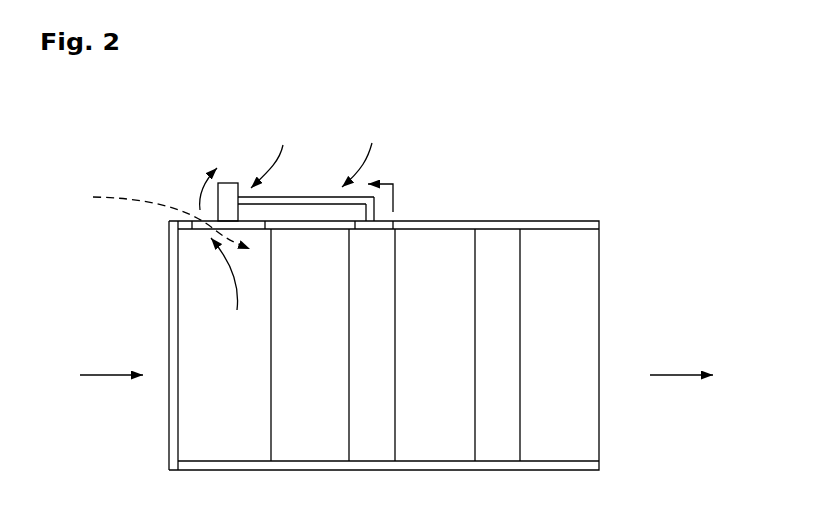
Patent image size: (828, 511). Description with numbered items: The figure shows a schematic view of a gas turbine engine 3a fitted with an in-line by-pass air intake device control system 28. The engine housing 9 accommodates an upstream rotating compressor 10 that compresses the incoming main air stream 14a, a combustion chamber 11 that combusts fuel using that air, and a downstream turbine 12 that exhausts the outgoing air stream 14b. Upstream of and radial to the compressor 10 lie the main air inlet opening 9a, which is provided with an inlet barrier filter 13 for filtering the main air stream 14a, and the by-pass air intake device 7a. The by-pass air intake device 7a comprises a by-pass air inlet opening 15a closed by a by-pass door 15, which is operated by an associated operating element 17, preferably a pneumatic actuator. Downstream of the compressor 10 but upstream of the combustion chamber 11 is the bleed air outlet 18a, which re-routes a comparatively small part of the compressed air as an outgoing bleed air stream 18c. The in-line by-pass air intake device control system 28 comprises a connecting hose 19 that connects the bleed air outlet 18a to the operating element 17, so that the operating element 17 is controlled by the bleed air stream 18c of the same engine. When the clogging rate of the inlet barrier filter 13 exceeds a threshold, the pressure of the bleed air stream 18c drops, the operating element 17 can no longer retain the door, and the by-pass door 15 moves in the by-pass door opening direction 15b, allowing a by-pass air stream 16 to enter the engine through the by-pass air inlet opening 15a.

The gas turbine engine 3a is at (503, 182).
The by-pass air intake device 7a is at (277, 152).
The engine housing 9 is at (572, 228).
The main air inlet opening 9a is at (184, 455).
The upstream rotating compressor 10 is at (298, 367).
The combustion chamber 11 is at (423, 367).
The downstream turbine 12 is at (545, 367).
The inlet barrier filter 13 is at (172, 416).
The main air stream 14a is at (106, 372).
The outgoing air stream 14b is at (676, 372).
The by-pass door 15 is at (200, 229).
The by-pass air inlet opening 15a is at (233, 285).
The by-pass door opening direction 15b is at (203, 190).
The by-pass air stream 16 is at (113, 196).
The operating element 17 is at (228, 190).
The bleed air outlet 18a is at (371, 230).
The outgoing bleed air stream 18c is at (397, 188).
The connecting hose 19 is at (323, 200).
The in-line by-pass air intake device control system 28 is at (365, 151).